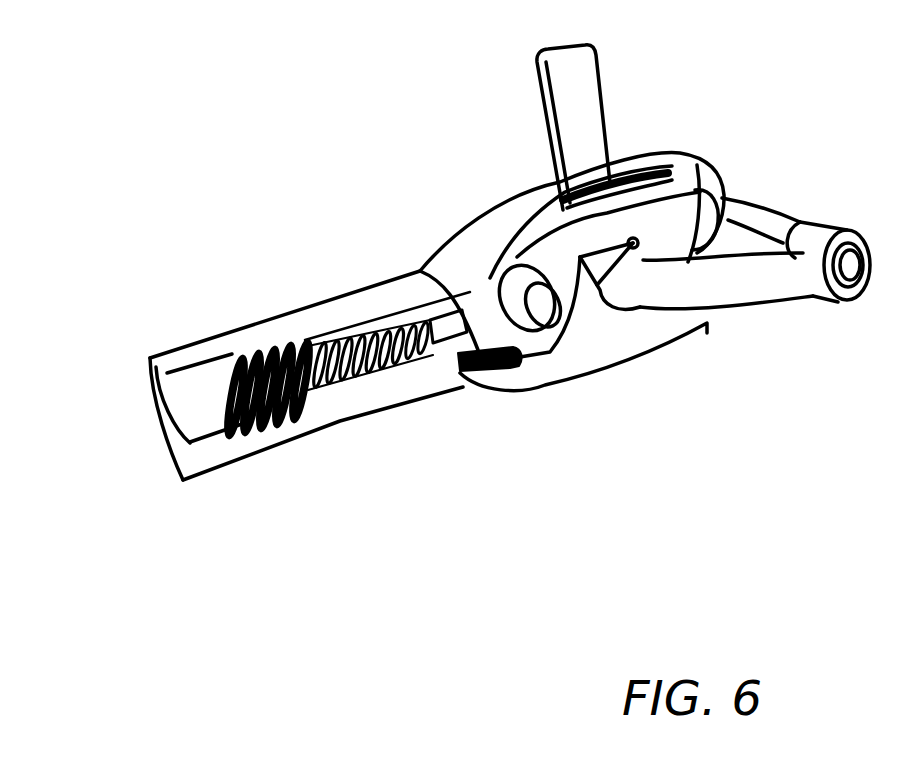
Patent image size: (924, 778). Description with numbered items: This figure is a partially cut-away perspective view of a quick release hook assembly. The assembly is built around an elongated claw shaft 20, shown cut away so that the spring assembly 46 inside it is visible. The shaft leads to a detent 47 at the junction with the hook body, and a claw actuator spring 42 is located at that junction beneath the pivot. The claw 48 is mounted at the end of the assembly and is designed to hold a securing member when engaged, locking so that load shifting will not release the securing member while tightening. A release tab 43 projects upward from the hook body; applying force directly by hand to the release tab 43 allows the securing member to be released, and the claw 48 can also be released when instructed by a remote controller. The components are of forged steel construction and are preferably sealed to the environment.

The claw shaft 20 is at (200, 333).
The claw actuator spring 42 is at (520, 363).
The release tab 43 is at (600, 90).
The spring assembly 46 is at (358, 378).
The detent 47 is at (439, 343).
The claw 48 is at (660, 215).